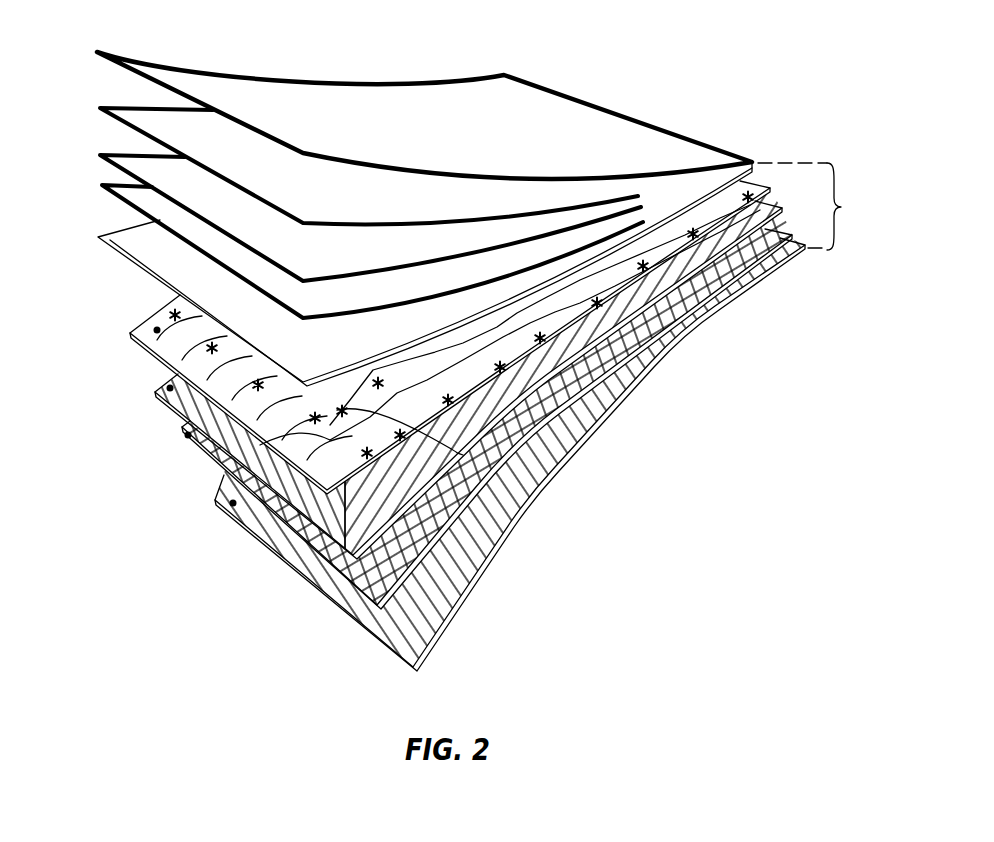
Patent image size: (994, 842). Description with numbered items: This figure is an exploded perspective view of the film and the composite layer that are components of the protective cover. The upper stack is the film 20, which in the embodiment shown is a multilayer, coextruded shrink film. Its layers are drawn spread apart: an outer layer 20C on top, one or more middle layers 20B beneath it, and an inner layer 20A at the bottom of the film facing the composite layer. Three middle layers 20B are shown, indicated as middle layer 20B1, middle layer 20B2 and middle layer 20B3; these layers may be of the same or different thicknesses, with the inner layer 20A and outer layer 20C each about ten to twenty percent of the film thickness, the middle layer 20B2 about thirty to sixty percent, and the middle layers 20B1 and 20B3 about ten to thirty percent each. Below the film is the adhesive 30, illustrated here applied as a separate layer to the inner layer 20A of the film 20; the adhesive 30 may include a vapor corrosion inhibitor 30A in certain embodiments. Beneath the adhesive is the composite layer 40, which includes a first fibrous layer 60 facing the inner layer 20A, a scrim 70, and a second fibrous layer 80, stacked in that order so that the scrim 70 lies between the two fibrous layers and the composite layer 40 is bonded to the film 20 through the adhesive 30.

The film 20 is at (394, 201).
The inner layer 20A is at (135, 250).
The middle layers 20B is at (340, 167).
The middle layer 20B1 is at (418, 280).
The middle layer 20B2 is at (360, 240).
The middle layer 20B3 is at (181, 132).
The outer layer 20C is at (360, 100).
The adhesive 30 is at (138, 343).
The vapor corrosion inhibitor 30A is at (503, 482).
The composite layer 40 is at (841, 207).
The first fibrous layer 60 is at (153, 393).
The scrim 70 is at (182, 433).
The second fibrous layer 80 is at (222, 506).